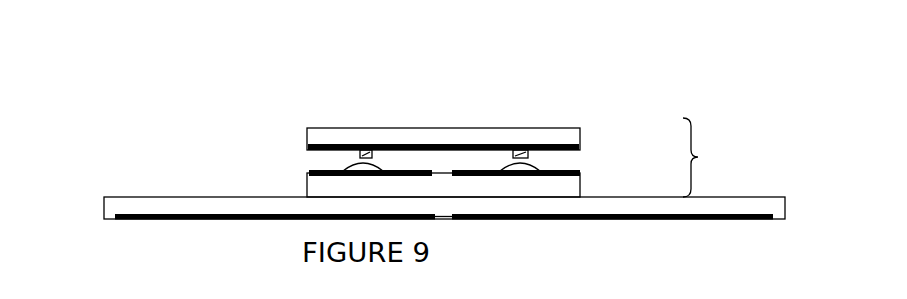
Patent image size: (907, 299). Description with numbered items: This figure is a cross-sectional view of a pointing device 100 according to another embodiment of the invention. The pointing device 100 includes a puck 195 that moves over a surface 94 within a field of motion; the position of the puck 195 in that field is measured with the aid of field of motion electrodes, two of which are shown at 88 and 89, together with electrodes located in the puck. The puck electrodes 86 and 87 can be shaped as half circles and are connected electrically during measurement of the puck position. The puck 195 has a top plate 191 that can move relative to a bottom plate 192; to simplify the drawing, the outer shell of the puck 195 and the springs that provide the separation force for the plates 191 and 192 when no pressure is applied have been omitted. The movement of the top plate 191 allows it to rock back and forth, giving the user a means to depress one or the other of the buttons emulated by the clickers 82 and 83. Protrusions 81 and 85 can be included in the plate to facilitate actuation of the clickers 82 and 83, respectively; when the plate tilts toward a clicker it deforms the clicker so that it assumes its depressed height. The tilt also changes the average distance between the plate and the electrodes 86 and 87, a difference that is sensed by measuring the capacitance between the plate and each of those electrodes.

The pointing device 100 is at (113, 72).
The protrusion 81 is at (378, 150).
The clicker 82 is at (377, 170).
The clicker 83 is at (533, 171).
The protrusion 85 is at (508, 148).
The puck electrode 86 is at (322, 171).
The puck electrode 87 is at (578, 172).
The field of motion electrode 88 is at (210, 222).
The field of motion electrode 89 is at (698, 218).
The surface 94 is at (762, 202).
The top plate 191 is at (563, 132).
The bottom plate 192 is at (503, 185).
The puck 195 is at (715, 157).